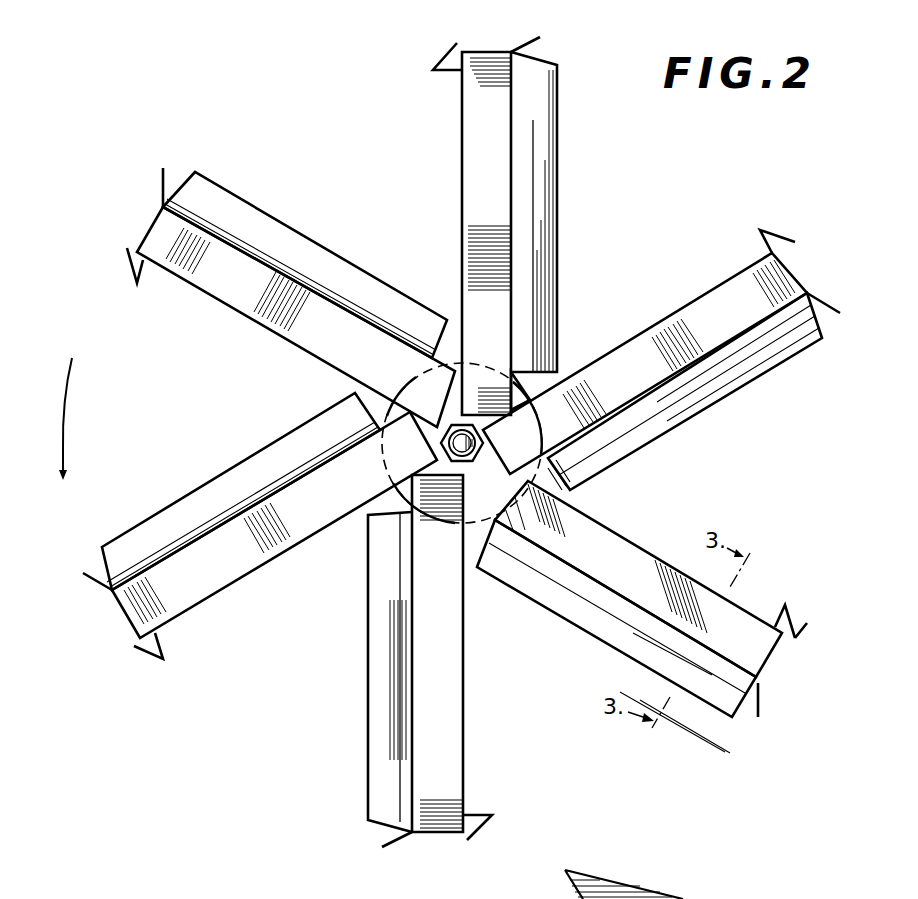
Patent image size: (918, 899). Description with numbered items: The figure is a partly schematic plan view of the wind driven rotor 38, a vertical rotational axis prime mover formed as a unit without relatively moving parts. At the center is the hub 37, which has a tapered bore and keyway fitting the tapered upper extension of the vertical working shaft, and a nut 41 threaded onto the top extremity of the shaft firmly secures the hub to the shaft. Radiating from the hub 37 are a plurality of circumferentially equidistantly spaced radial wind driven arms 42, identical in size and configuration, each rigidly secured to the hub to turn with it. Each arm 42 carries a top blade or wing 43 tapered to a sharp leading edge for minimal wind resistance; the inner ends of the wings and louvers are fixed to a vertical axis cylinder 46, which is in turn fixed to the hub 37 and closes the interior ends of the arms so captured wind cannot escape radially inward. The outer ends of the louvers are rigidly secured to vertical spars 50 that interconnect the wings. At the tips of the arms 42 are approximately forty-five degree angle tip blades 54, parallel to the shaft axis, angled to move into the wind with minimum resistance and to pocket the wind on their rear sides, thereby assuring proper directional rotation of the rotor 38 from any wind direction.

The hub 37 is at (533, 412).
The wind driven rotor 38 is at (174, 490).
The nut 41 is at (482, 440).
The radial wind driven arm 42 is at (452, 210).
The top blade or wing 43 is at (698, 898).
The vertical axis cylinder 46 is at (558, 478).
The vertical spar 50 is at (542, 38).
The tip blade 54 is at (797, 638).